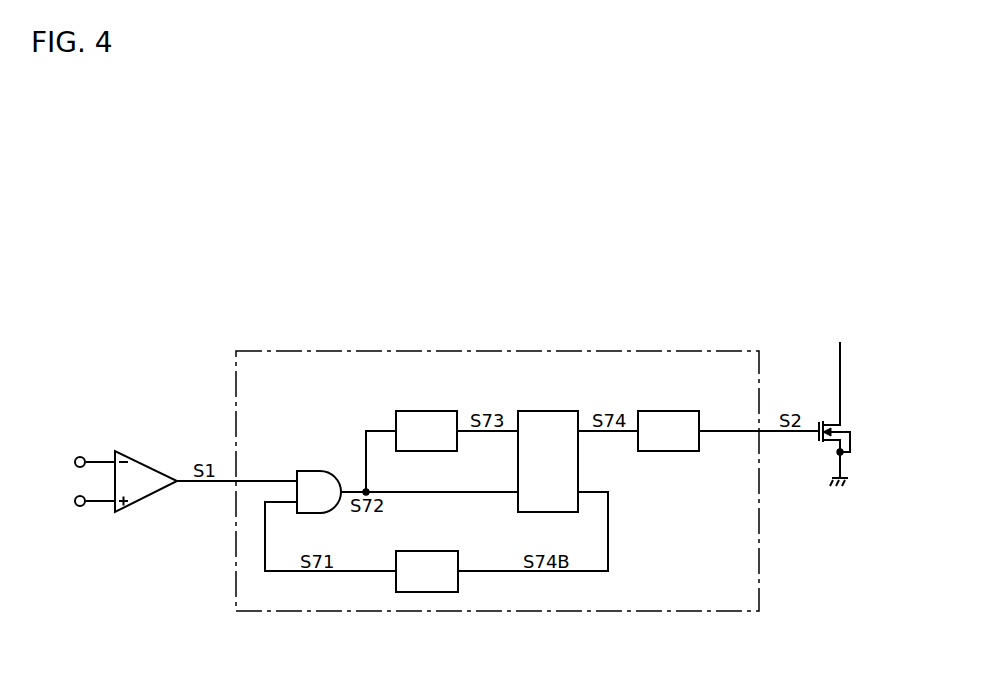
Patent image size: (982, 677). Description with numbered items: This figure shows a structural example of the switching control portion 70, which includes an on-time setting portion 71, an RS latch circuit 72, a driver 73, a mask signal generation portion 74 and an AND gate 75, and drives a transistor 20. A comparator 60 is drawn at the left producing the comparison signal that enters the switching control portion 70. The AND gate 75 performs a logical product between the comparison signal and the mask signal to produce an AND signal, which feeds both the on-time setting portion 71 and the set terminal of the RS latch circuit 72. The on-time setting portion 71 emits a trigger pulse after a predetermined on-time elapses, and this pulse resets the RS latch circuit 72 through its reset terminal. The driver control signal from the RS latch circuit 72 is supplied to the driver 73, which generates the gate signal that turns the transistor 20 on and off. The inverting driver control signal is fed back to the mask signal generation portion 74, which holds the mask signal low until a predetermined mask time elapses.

The comparator 60 is at (148, 465).
The switching control portion 70 is at (499, 351).
The on-time setting portion 71 is at (429, 411).
The RS latch circuit 72 is at (550, 411).
The driver 73 is at (672, 411).
The mask signal generation portion 74 is at (430, 551).
The AND gate 75 is at (318, 471).
The transistor 20 is at (856, 414).